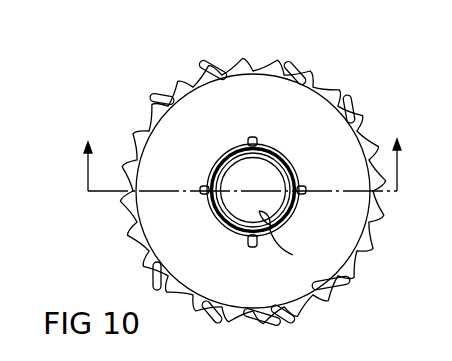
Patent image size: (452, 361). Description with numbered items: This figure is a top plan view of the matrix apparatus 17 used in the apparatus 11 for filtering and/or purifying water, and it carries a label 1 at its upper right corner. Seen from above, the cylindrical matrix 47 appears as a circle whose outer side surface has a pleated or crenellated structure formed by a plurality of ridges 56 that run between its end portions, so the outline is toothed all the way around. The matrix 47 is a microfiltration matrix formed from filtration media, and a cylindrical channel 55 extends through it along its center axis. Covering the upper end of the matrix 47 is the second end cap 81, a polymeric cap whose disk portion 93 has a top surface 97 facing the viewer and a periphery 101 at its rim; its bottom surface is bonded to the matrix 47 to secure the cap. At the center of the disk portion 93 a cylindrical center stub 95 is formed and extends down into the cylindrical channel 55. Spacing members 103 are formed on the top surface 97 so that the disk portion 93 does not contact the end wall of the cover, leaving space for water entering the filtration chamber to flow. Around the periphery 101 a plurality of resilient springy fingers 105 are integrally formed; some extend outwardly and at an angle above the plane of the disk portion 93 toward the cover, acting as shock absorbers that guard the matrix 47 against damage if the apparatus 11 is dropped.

The ridges 56 is at (264, 64).
The periphery 101 is at (134, 232).
The matrix 47 is at (237, 313).
The cylindrical channel 55 is at (237, 199).
The spacing members 103 is at (247, 141).
The cylindrical center stub 95 is at (285, 239).
The matrix apparatus 17 is at (339, 74).
The apparatus for filtering and/or purifying water 11 is at (242, 152).
The second end cap 81 is at (204, 133).
The disk portion 93 is at (323, 134).
The top surface 97 is at (346, 225).
The resilient springy fingers 105 is at (425, 199).
The device 1 is at (447, 37).